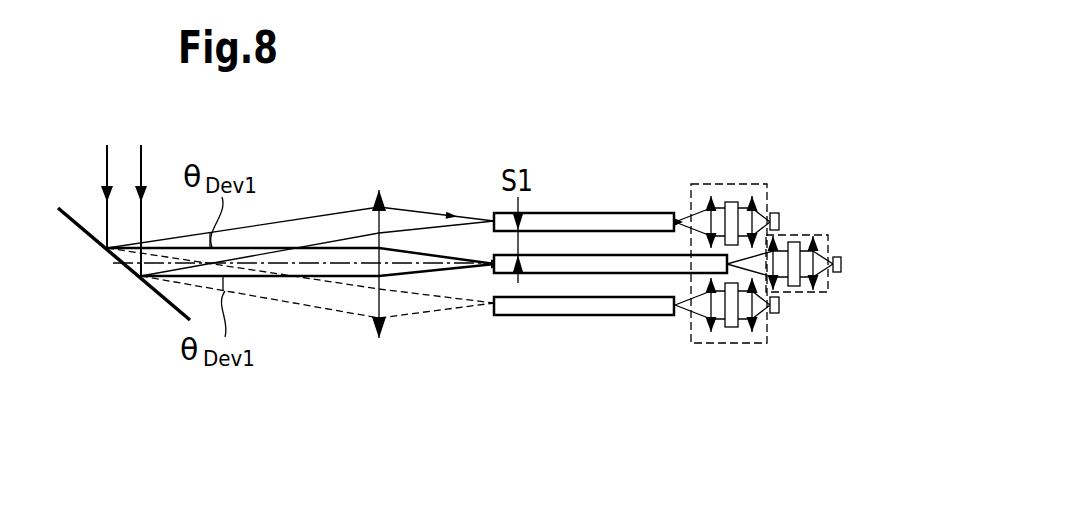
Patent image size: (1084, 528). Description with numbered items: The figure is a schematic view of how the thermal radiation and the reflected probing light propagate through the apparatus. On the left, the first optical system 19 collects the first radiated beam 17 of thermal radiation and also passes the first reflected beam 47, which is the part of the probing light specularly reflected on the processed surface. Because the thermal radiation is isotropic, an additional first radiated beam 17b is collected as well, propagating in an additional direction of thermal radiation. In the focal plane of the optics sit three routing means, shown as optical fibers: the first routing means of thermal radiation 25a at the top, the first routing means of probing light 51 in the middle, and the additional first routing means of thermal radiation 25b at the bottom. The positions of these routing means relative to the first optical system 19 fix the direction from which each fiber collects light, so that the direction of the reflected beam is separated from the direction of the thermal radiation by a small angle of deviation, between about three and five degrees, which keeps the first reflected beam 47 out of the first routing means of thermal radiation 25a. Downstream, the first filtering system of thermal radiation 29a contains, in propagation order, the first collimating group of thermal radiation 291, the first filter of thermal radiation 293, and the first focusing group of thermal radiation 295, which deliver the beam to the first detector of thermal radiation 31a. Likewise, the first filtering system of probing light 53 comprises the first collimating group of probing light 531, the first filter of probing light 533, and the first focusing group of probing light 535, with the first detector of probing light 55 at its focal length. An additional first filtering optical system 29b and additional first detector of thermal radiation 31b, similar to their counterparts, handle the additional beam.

The first radiated beam 17 is at (320, 214).
The additional first radiated beam 17b is at (303, 308).
The first optical system 19 is at (381, 192).
The first routing means of thermal radiation 25a is at (562, 212).
The first routing means of thermal radiation (additional) 25b is at (633, 316).
The first filtering system of thermal radiation 29a is at (690, 200).
The additional first filtering optical system 29b is at (732, 343).
The first collimating group of thermal radiation 291 is at (710, 196).
The first filter of thermal radiation 293 is at (732, 201).
The first focusing group of thermal radiation 295 is at (752, 196).
The first detector of thermal radiation 31a is at (774, 213).
The additional first detector of thermal radiation 31b is at (780, 304).
The first reflected beam 47 is at (442, 270).
The first routing means of probing light 51 is at (560, 275).
The first filtering system of probing light 53 is at (827, 235).
The first collimating group of probing light 531 is at (775, 236).
The first filter of probing light 533 is at (795, 241).
The first focusing group of probing light 535 is at (815, 240).
The first detector of probing light 55 is at (841, 264).